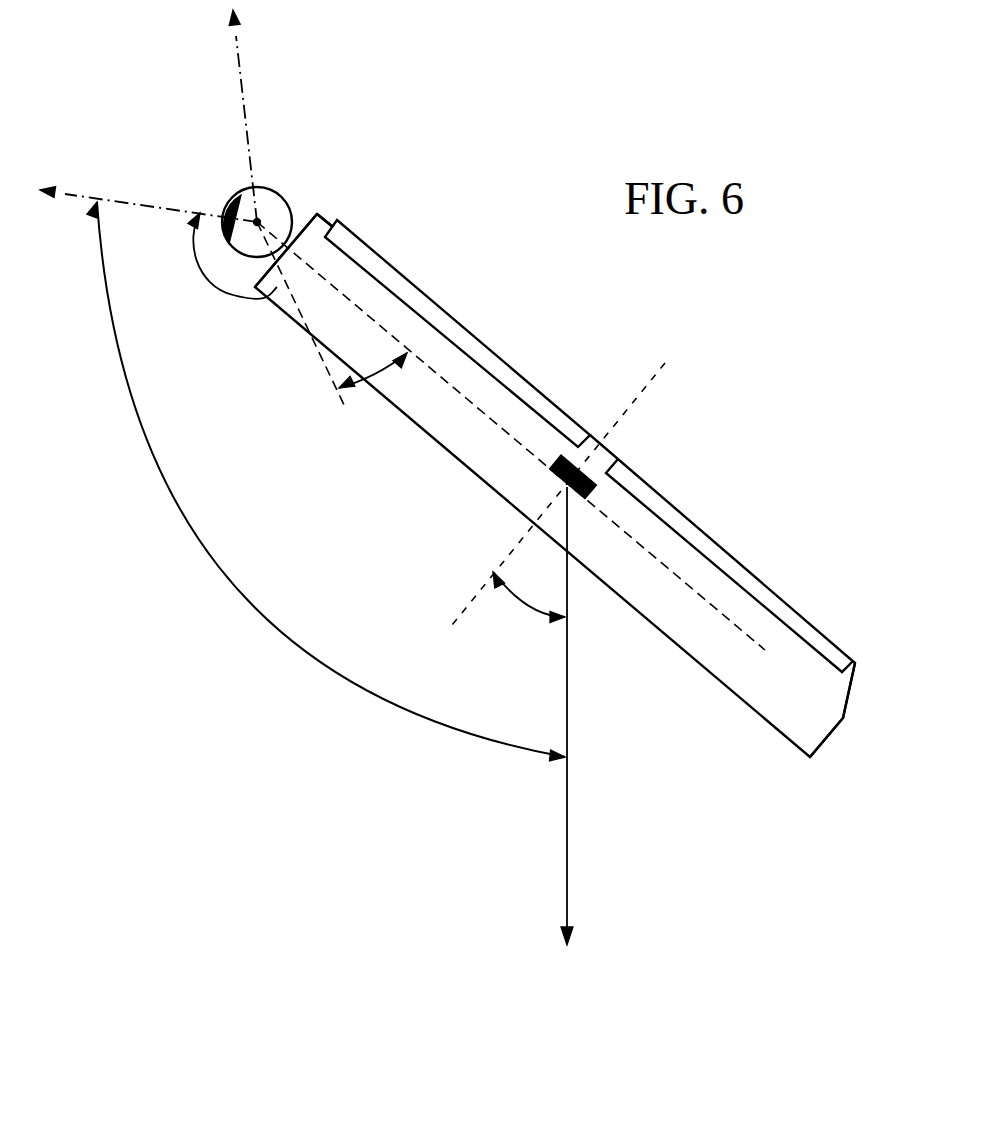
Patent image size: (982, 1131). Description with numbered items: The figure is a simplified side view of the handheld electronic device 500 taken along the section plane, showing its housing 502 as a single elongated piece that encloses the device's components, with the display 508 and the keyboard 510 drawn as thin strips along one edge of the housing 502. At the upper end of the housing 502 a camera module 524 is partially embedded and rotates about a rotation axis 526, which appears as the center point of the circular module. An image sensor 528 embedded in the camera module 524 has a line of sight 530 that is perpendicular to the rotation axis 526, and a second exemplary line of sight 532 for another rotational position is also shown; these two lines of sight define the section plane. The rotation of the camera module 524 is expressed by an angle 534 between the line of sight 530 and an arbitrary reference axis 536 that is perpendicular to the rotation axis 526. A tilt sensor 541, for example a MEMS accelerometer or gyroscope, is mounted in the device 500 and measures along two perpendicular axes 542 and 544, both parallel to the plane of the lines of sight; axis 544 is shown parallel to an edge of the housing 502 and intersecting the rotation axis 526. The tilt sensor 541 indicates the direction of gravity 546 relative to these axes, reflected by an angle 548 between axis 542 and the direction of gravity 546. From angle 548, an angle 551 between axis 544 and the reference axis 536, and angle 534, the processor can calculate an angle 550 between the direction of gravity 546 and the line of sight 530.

The handheld electronic device 500 is at (830, 737).
The housing 502 is at (842, 687).
The display 508 is at (400, 259).
The keyboard 510 is at (667, 495).
The camera module 524 is at (294, 222).
The rotation axis 526 is at (258, 222).
The image sensor 528 is at (224, 215).
The line of sight 530 is at (142, 201).
The second line of sight 532 is at (238, 59).
The angle 534 is at (197, 258).
The reference axis 536 is at (318, 342).
The tilt sensor 541 is at (555, 460).
The axis 542 is at (474, 592).
The axis 544 is at (468, 397).
The direction of gravity 546 is at (567, 675).
The angle 548 is at (520, 610).
The angle 550 is at (258, 563).
The angle 551 is at (357, 395).